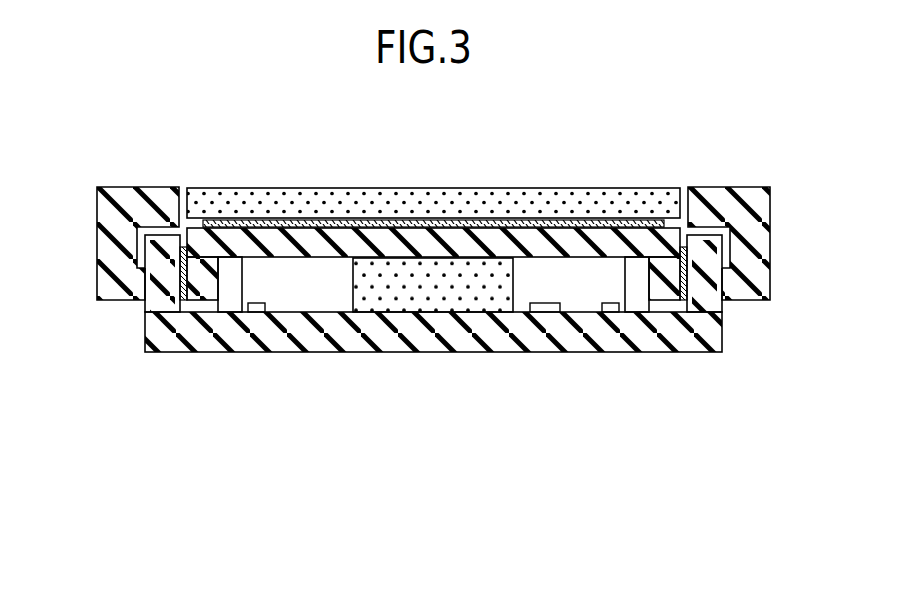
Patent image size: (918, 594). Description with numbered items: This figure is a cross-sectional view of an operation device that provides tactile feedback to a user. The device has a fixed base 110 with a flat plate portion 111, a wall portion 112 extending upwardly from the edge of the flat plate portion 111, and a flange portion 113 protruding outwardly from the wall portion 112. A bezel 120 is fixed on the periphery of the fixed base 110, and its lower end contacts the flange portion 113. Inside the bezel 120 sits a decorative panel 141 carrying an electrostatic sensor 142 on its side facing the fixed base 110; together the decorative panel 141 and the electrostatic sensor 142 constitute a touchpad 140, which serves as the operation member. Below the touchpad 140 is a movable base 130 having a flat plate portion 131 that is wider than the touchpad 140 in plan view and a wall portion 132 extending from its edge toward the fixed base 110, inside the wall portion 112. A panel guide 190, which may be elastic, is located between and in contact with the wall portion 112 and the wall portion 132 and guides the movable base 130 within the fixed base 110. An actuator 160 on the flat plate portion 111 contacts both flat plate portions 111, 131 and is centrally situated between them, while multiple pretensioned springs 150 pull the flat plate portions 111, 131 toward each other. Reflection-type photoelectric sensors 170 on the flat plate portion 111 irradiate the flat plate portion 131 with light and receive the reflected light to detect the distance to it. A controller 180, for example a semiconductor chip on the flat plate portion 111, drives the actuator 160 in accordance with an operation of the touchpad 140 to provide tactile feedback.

The fixed base 110 is at (625, 378).
The flat plate portion 111 is at (497, 336).
The wall portion 112 is at (162, 243).
The flange portion 113 is at (108, 283).
The bezel 120 is at (115, 203).
The movable base 130 is at (432, 277).
The flat plate portion 131 is at (435, 240).
The wall portion 132 is at (203, 288).
The touchpad 140 is at (433, 178).
The decorative panel 141 is at (509, 206).
The electrostatic sensor 142 is at (361, 224).
The pretensioned spring 150 is at (229, 270).
The actuator 160 is at (434, 290).
The reflection-type photoelectric sensor 170 is at (257, 313).
The controller 180 is at (545, 313).
The panel guide 190 is at (182, 267).